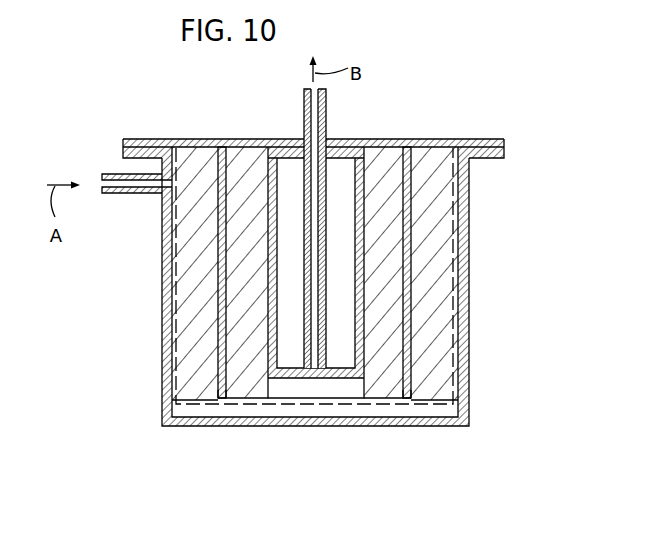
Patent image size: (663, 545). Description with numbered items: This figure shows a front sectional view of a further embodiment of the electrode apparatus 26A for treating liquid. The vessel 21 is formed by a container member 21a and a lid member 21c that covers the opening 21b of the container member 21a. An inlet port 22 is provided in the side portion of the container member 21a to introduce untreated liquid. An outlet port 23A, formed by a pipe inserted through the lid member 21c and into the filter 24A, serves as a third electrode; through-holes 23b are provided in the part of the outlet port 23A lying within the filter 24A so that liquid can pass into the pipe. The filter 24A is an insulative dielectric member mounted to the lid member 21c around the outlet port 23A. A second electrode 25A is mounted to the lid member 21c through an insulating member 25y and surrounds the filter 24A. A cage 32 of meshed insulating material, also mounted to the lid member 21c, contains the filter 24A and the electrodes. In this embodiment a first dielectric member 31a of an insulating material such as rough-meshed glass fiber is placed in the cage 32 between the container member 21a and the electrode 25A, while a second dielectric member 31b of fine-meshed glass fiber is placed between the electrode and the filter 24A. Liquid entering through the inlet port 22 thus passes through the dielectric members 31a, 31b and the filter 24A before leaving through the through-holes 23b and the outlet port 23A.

The vessel 21 is at (334, 257).
The container member 21a is at (470, 310).
The opening 21b is at (183, 139).
The lid member 21c is at (452, 138).
The inlet port 22 is at (120, 187).
The outlet port 23A is at (316, 110).
The through-holes 23b is at (324, 240).
The filter 24A is at (283, 180).
The insulating member 25y is at (227, 147).
The second electrode 25A is at (223, 398).
The electrode apparatus 26A is at (160, 265).
The first dielectric member 31a is at (163, 358).
The second dielectric member 31b is at (164, 283).
The cage 32 is at (163, 303).